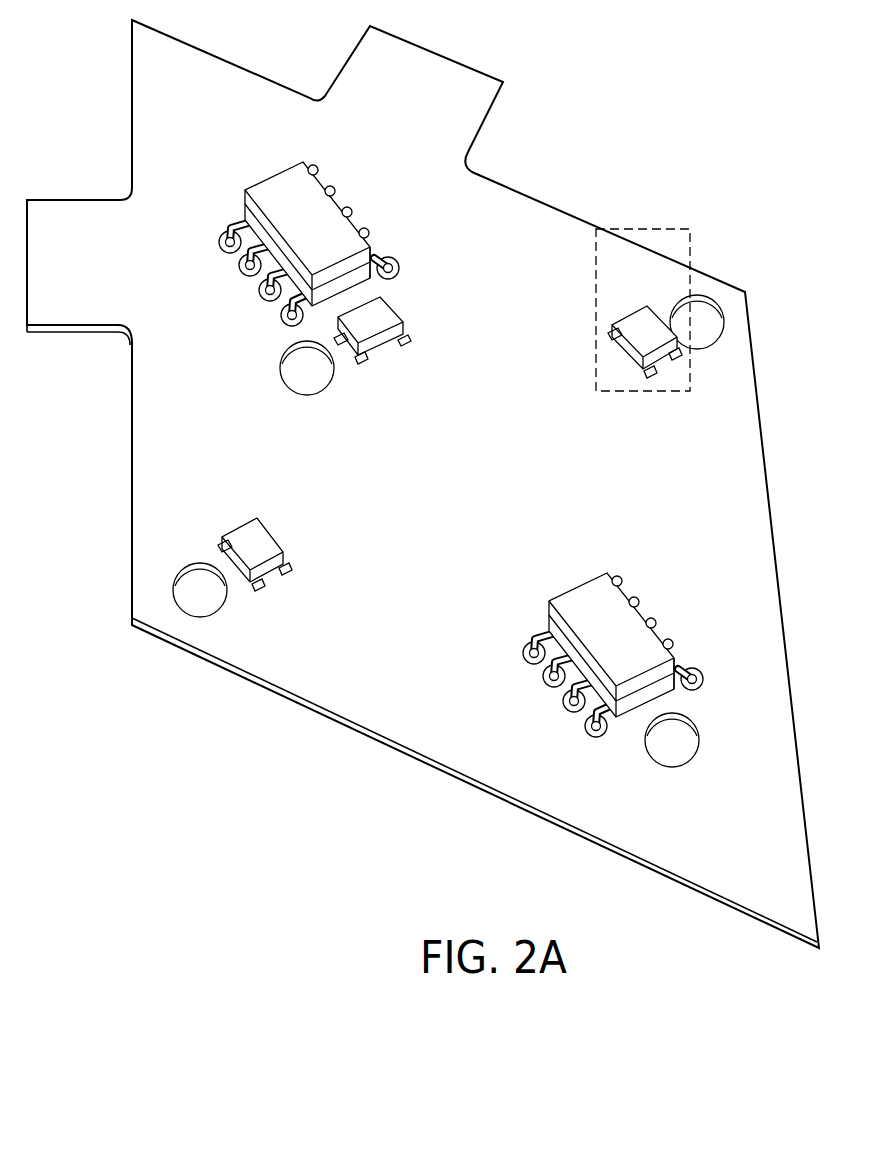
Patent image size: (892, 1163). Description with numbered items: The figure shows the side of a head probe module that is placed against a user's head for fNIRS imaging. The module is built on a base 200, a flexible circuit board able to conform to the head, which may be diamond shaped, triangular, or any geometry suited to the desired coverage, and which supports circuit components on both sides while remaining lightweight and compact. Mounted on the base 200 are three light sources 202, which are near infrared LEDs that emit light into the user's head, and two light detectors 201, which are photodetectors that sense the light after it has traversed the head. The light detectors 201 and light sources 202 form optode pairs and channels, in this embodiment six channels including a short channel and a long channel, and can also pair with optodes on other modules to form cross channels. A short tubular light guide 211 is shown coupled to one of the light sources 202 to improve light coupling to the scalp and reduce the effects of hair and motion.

The base 200 is at (263, 74).
The light detectors 201 is at (290, 185).
The light sources 202 is at (380, 341).
The short tubular light guide 211 is at (652, 291).